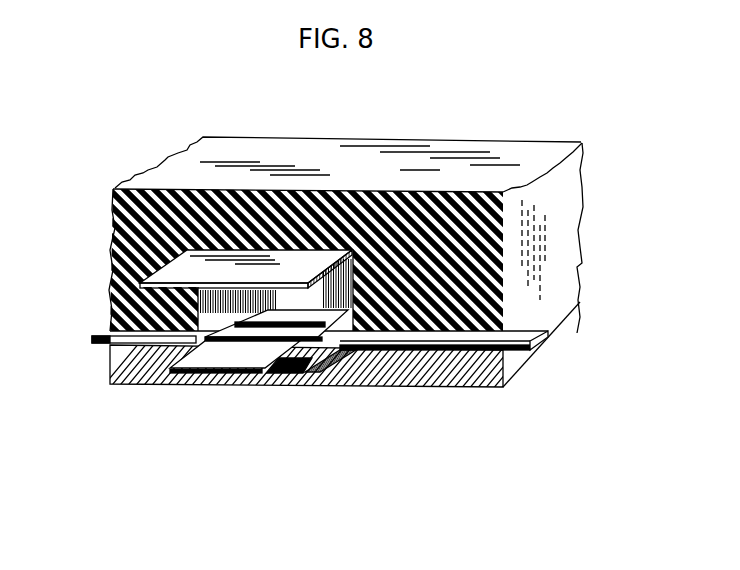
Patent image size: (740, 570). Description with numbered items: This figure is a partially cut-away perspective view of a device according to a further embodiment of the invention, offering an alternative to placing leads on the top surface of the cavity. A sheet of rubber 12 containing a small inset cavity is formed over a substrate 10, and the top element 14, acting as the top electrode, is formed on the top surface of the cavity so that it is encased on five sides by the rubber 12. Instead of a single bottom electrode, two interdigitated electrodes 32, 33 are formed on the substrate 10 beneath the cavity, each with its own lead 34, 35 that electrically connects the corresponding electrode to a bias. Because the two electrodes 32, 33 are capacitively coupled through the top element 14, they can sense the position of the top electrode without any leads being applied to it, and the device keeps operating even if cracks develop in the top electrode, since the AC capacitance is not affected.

The substrate 10 is at (558, 338).
The sheet of rubber 12 is at (565, 257).
The element 14 is at (152, 272).
The interdigitated electrode 32 is at (210, 366).
The interdigitated electrode 33 is at (303, 367).
The lead 34 is at (98, 337).
The lead 35 is at (532, 348).